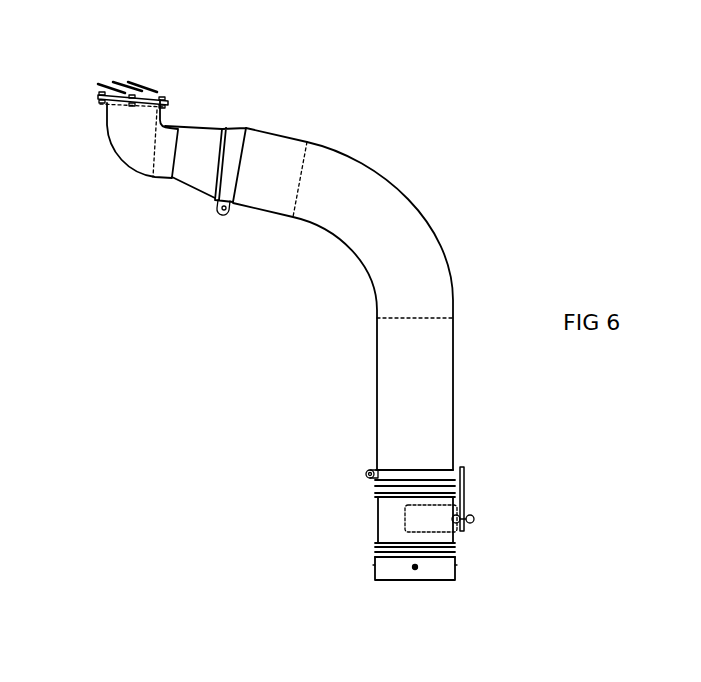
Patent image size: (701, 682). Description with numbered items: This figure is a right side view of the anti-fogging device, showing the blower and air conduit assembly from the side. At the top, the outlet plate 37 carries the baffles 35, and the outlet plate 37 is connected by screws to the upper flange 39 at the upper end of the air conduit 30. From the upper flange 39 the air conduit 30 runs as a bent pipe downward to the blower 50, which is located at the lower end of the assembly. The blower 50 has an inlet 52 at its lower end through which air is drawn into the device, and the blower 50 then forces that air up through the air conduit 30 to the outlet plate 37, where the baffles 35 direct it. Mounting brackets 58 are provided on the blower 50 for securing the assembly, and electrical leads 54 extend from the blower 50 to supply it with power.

The air conduit 30 is at (413, 200).
The baffles 35 is at (135, 80).
The outlet plate 37 is at (165, 95).
The upper flange 39 is at (107, 103).
The blower 50 is at (400, 527).
The inlet 52 is at (415, 583).
The electrical leads 54 is at (462, 472).
The mounting brackets 58 is at (465, 527).